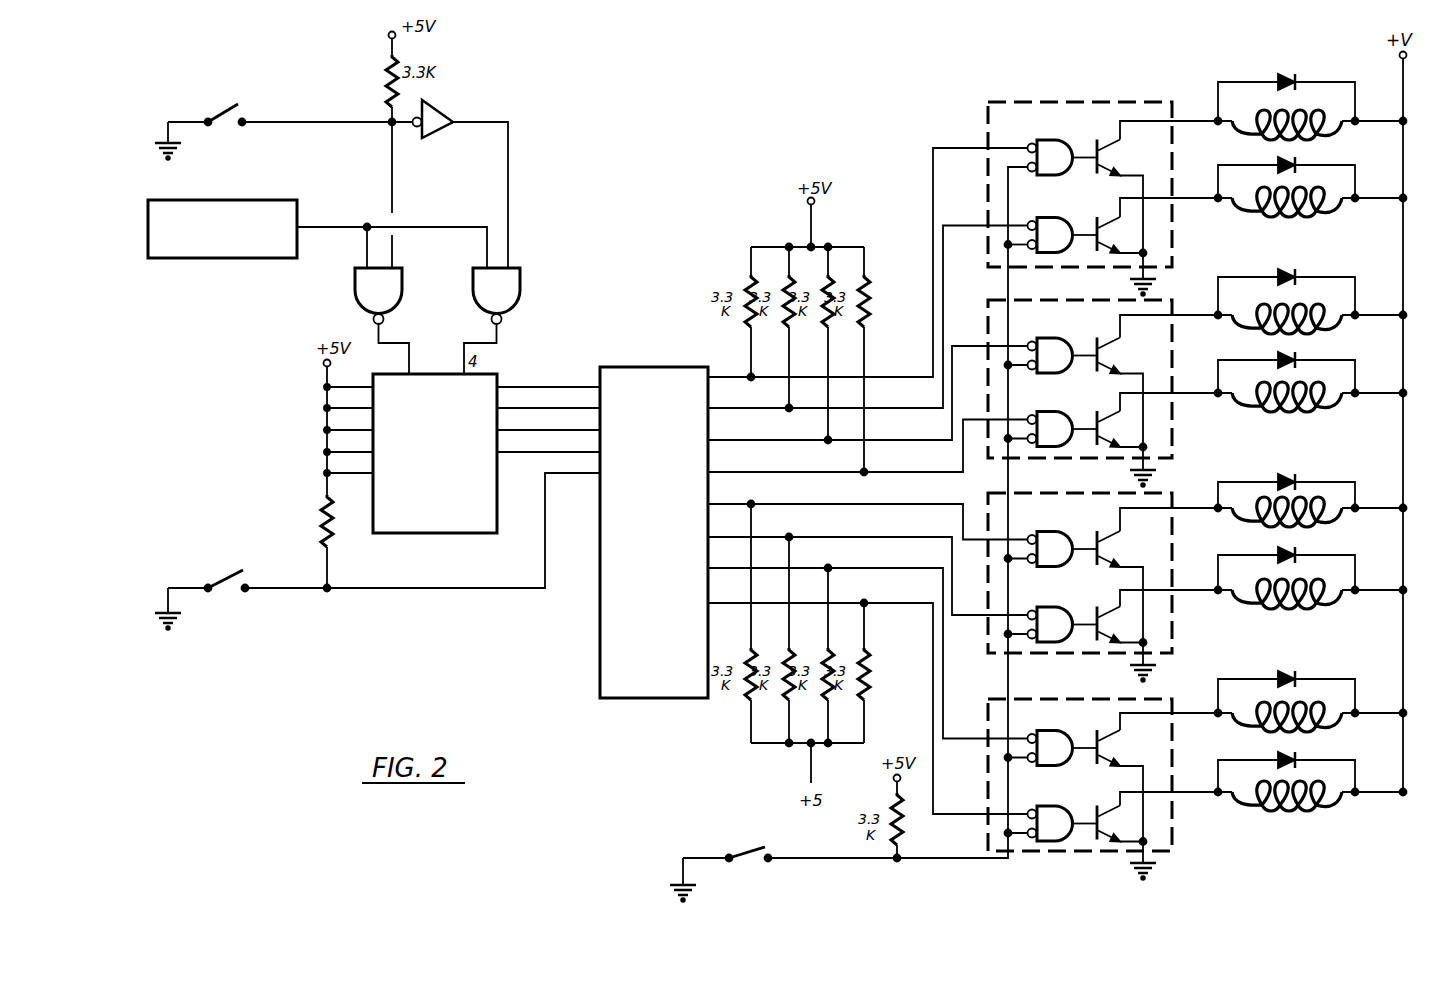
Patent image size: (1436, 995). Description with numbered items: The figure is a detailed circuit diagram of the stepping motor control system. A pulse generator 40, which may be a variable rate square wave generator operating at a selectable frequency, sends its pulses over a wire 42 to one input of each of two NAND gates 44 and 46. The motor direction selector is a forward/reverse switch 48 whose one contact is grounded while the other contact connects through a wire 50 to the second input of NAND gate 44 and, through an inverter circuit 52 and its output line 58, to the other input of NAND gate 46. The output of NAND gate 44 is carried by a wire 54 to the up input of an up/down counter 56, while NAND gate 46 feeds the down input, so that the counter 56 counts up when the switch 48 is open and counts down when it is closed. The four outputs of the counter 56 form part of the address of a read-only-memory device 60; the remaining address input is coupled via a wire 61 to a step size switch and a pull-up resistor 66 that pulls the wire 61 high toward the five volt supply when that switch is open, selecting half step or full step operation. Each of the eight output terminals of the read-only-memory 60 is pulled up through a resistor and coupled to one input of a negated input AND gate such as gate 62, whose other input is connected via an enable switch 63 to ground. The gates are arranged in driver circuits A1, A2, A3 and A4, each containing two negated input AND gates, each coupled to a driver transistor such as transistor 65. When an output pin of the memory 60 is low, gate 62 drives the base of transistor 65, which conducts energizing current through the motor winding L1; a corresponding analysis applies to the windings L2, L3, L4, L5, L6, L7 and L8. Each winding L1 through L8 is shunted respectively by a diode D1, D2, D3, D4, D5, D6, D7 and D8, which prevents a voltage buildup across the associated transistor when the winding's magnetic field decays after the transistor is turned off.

The pulse generator 40 is at (212, 260).
The wire 42 is at (347, 223).
The NAND gate 44 is at (405, 283).
The NAND gate 46 is at (523, 287).
The forward/reverse switch 48 is at (247, 110).
The wire 50 is at (393, 182).
The inverter circuit 52 is at (442, 101).
The wire 54 is at (395, 340).
The up/down counter 56 is at (443, 536).
The output line of inverter 58 is at (510, 198).
The read-only-memory device 60 is at (658, 364).
The wire 61 is at (487, 590).
The negated input AND gate 62 is at (1045, 148).
The enable switch 63 is at (750, 864).
The transistor 65 is at (1097, 140).
The pull-up resistor 66 is at (325, 503).
The driver module A1 is at (1103, 181).
The driver module A2 is at (1103, 393).
The driver module A3 is at (1103, 587).
The driver module A4 is at (1103, 789).
The diode D1 is at (1283, 72).
The diode D2 is at (1283, 155).
The diode D3 is at (1283, 267).
The diode D4 is at (1283, 350).
The diode D5 is at (1283, 472).
The diode D6 is at (1283, 545).
The diode D7 is at (1283, 669).
The diode D8 is at (1283, 750).
The motor winding L1 is at (1300, 136).
The motor winding L2 is at (1300, 213).
The motor winding L3 is at (1300, 330).
The motor winding L4 is at (1300, 408).
The motor winding L5 is at (1300, 523).
The motor winding L6 is at (1300, 605).
The motor winding L7 is at (1300, 728).
The motor winding L8 is at (1300, 807).